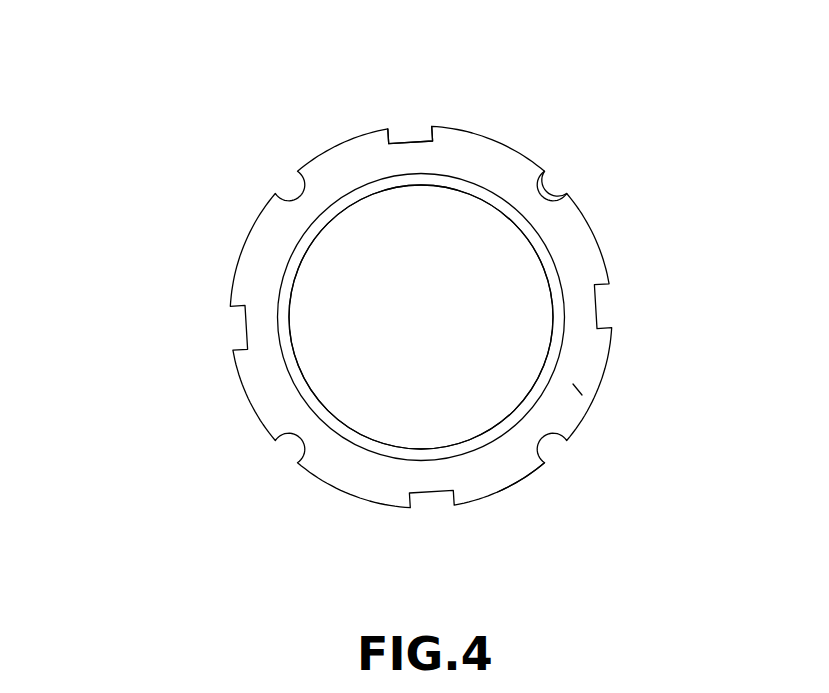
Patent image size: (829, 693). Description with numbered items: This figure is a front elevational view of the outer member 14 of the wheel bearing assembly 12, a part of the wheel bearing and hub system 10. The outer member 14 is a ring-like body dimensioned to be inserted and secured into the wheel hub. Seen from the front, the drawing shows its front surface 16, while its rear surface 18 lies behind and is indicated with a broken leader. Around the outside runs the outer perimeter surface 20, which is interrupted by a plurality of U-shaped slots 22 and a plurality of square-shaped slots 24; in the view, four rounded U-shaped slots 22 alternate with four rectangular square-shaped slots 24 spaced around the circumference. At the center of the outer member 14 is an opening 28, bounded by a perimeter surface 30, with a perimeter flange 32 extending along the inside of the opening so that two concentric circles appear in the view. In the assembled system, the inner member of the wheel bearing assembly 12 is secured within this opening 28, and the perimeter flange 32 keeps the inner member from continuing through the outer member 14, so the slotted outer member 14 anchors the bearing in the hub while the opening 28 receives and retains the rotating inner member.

The lock ring assembly 10 is at (90, 98).
The wheel bearing assembly 12 is at (426, 290).
The outer member 14 is at (678, 204).
The front surface 16 is at (580, 350).
The rear surface 18 is at (573, 384).
The outer perimeter surface 20 is at (520, 487).
The U-shaped slots 22 is at (551, 190).
The square-shaped slots 24 is at (412, 138).
The opening 28 is at (372, 398).
The perimeter surface 30 is at (277, 315).
The perimeter flange 32 is at (298, 368).